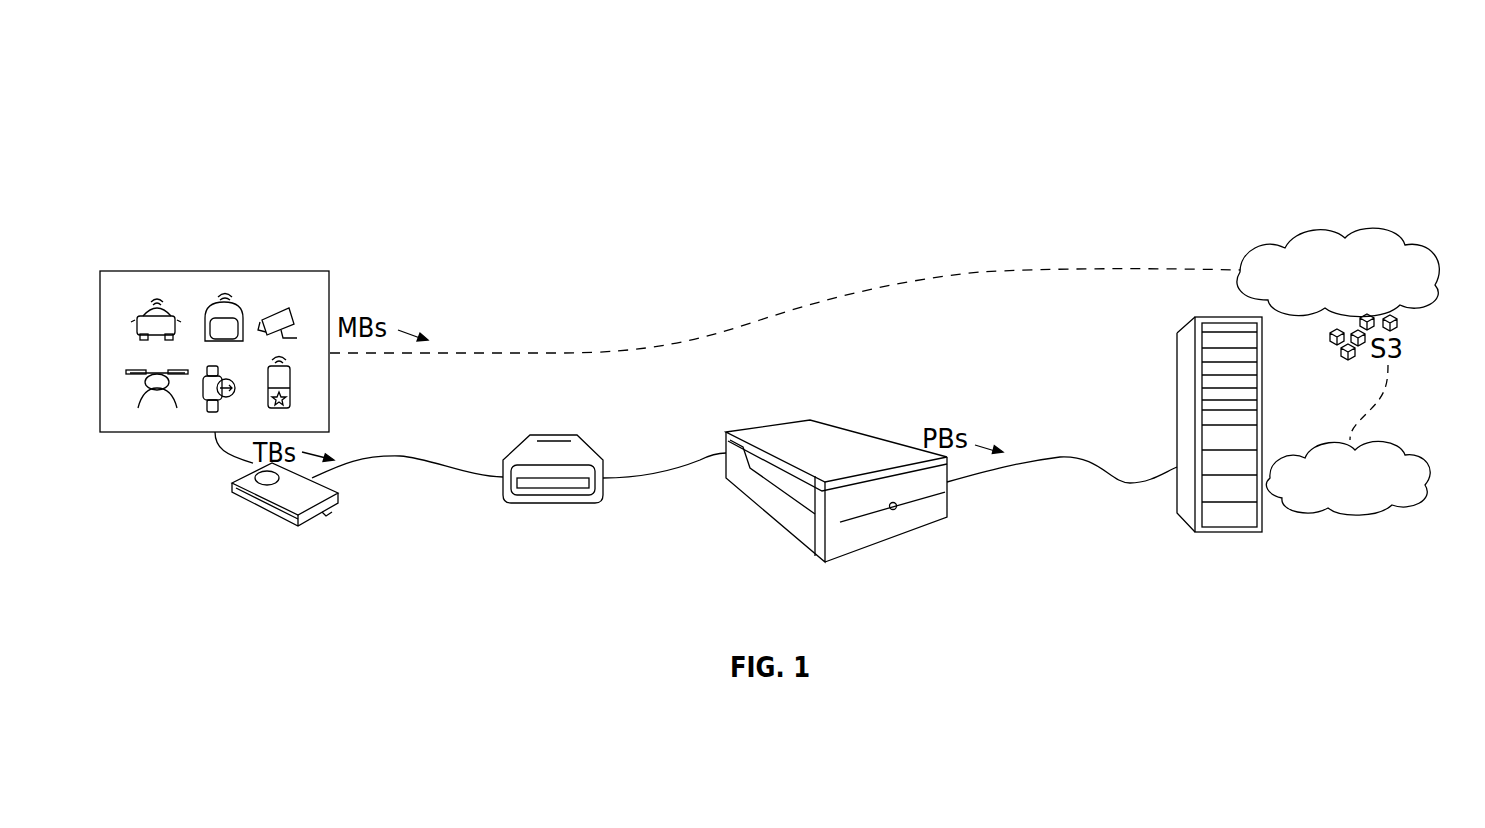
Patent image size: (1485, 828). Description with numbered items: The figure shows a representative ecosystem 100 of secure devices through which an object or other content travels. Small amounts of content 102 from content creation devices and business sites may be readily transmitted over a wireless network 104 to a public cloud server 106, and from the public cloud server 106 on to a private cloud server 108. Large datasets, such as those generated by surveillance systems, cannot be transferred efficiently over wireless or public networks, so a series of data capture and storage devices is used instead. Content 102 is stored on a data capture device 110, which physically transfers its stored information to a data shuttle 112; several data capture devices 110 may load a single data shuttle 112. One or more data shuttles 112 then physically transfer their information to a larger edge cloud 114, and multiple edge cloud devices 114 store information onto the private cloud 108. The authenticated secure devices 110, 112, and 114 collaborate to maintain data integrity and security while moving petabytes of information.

The ecosystem 100 is at (1394, 99).
The content 102 is at (330, 284).
The wireless network 104 is at (580, 351).
The public cloud server 106 is at (1338, 230).
The private cloud server 108 is at (1380, 507).
The data capture device 110 is at (258, 508).
The data shuttle 112 is at (532, 443).
The edge cloud 114 is at (786, 420).